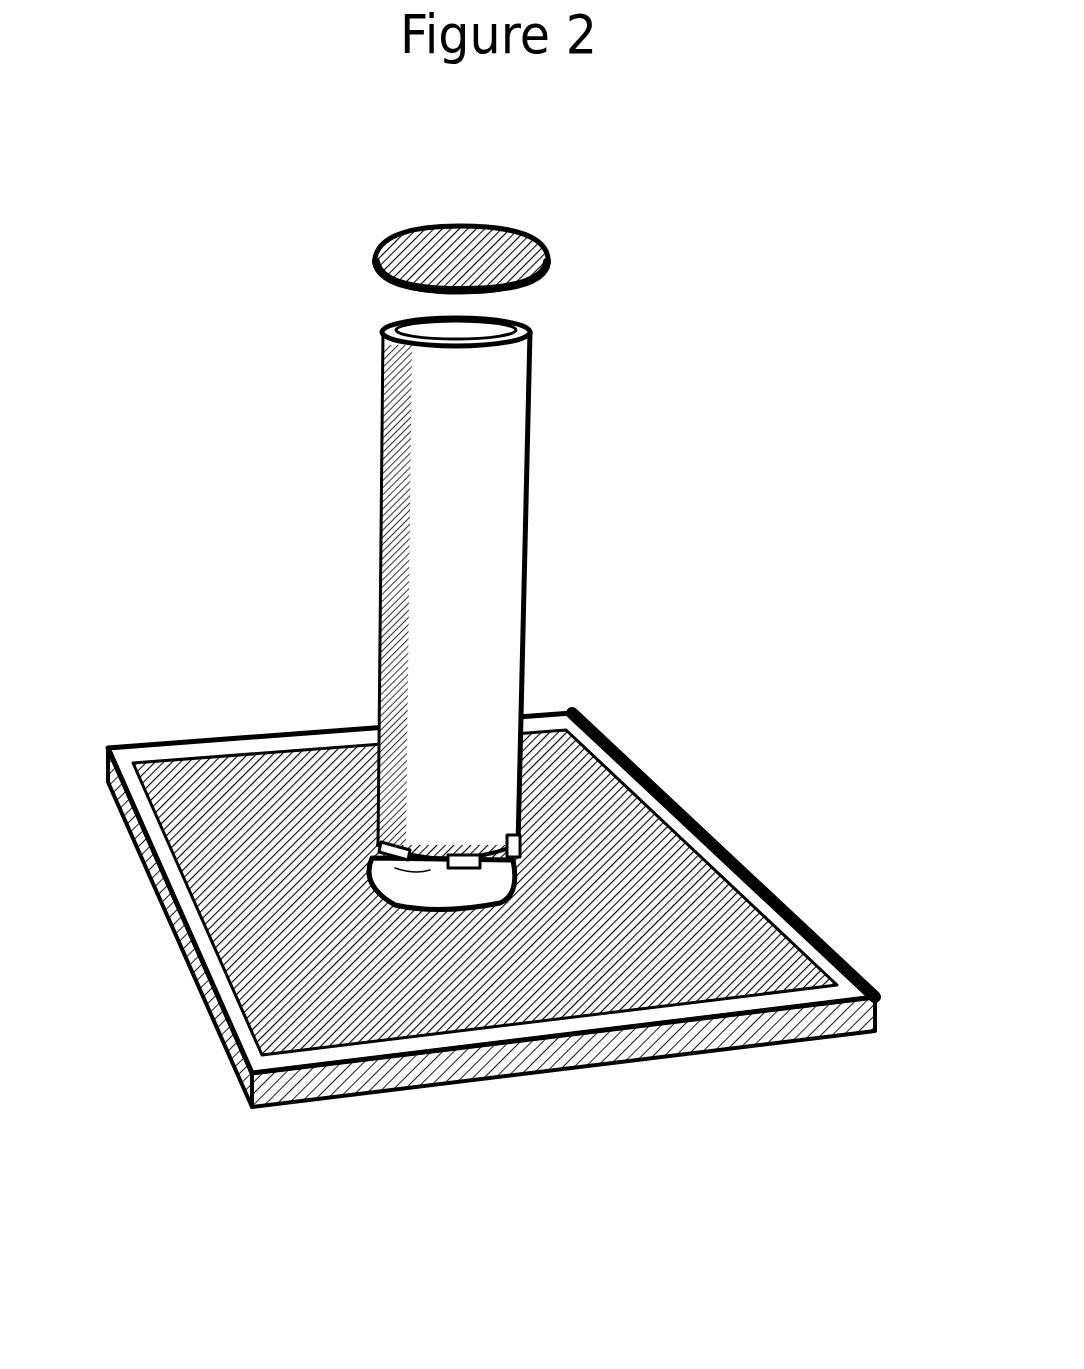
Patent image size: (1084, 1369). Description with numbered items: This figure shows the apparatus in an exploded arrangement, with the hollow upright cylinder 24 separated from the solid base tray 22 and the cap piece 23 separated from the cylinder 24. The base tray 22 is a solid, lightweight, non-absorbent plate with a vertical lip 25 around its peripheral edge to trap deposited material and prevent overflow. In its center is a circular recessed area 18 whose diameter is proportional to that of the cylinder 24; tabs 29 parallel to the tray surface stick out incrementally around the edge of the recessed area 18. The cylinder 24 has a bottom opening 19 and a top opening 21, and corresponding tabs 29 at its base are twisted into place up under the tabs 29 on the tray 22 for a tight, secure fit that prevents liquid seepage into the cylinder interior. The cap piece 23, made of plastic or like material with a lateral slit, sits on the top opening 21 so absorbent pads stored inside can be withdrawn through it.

The recessed area 18 is at (370, 908).
The bottom opening 19 is at (430, 868).
The top opening 21 is at (505, 323).
The base tray 22 is at (802, 927).
The cap piece 23 is at (373, 260).
The cylinder 24 is at (377, 645).
The vertical lip 25 is at (762, 892).
The tabs 29 is at (462, 856).